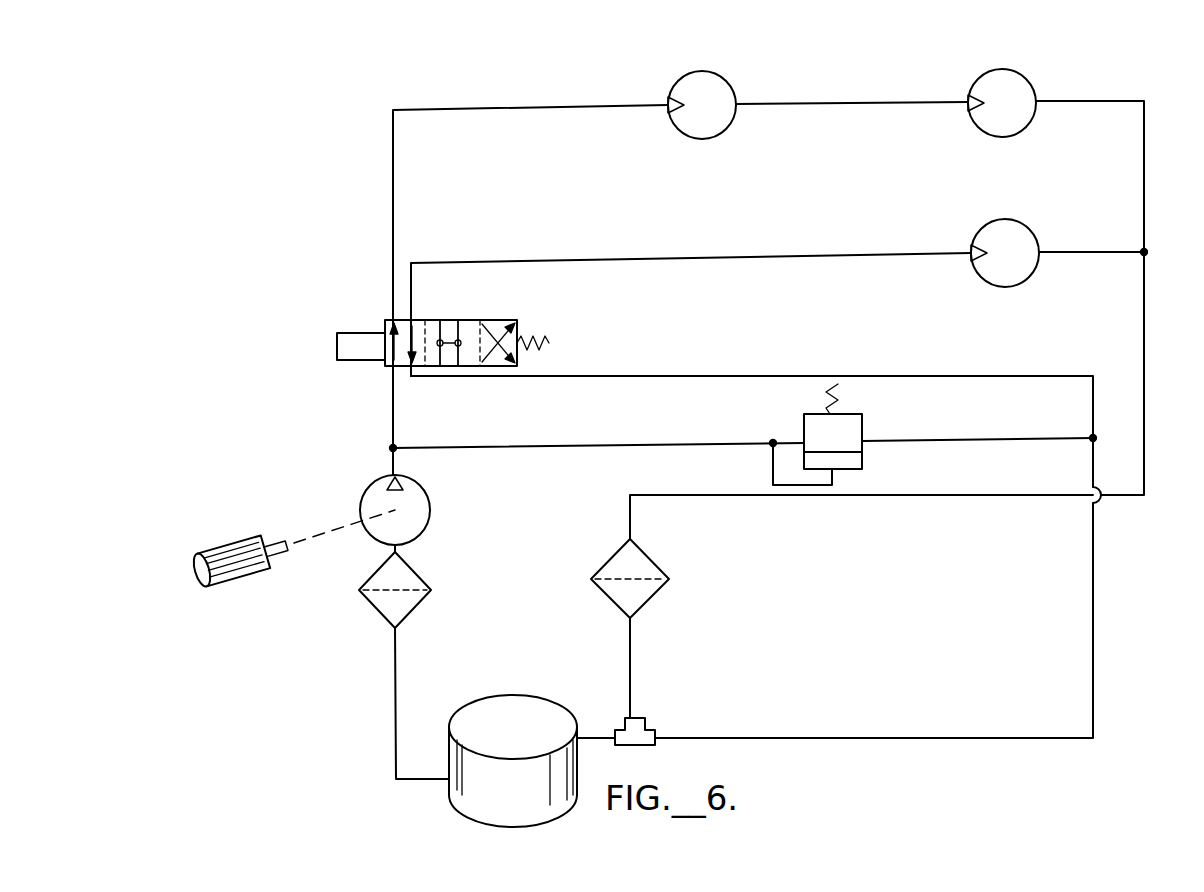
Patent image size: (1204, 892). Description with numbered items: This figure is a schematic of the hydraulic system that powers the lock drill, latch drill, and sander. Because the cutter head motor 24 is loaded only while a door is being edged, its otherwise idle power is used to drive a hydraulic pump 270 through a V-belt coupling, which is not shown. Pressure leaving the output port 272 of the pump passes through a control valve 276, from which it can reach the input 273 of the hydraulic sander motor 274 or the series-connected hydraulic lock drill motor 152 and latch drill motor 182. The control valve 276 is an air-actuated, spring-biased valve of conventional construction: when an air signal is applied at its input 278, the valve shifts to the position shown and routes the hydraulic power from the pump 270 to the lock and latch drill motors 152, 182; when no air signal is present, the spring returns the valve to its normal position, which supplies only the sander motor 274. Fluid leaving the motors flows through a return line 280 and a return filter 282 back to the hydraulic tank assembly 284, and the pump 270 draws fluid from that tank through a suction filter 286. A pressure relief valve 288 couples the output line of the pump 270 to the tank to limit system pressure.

The cutter head motor 24 is at (213, 549).
The lock drill motor 152 is at (724, 80).
The latch drill motor 182 is at (1024, 79).
The hydraulic pump 270 is at (425, 492).
The output port 272 is at (392, 477).
The input 273 is at (969, 252).
The sander motor 274 is at (1026, 229).
The control valve 276 is at (446, 320).
The input 278 is at (360, 332).
The return line 280 is at (1145, 194).
The return filter 282 is at (656, 563).
The hydraulic tank assembly 284 is at (455, 718).
The suction filter 286 is at (420, 572).
The pressure relief valve 288 is at (862, 421).